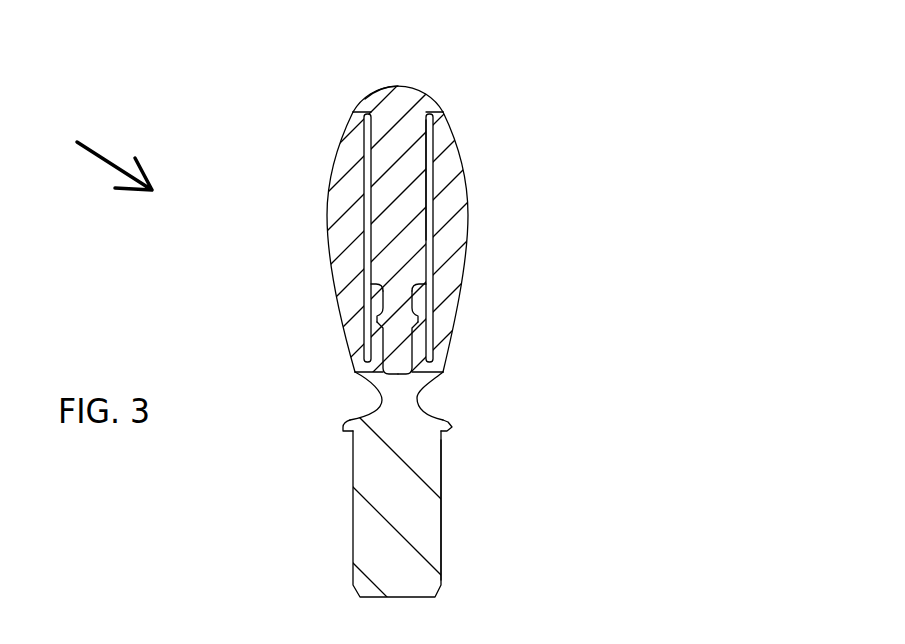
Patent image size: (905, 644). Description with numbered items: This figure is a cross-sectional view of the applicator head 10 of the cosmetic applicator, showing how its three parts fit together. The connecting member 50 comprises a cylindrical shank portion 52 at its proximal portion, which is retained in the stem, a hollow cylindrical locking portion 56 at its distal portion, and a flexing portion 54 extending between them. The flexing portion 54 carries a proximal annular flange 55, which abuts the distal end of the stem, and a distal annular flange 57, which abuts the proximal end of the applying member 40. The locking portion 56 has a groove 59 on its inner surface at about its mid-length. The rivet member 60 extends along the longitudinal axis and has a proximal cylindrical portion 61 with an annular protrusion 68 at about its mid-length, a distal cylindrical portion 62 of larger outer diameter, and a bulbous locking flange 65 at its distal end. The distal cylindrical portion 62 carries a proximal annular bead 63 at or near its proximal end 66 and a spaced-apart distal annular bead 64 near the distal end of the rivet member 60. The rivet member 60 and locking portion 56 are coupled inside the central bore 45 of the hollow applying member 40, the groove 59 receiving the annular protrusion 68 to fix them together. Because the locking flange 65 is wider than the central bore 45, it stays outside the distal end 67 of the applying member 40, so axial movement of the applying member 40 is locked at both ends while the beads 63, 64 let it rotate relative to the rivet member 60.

The applicator head 10 is at (94, 158).
The applying member 40 is at (453, 204).
The central bore 45 is at (430, 235).
The connecting member 50 is at (417, 527).
The shank portion 52 is at (441, 470).
The flexing portion 54 is at (413, 392).
The proximal annular flange 55 is at (343, 427).
The locking portion 56 is at (422, 342).
The distal annular flange 57 is at (355, 371).
The groove 59 is at (380, 319).
The rivet member 60 is at (403, 103).
The proximal cylindrical portion 61 is at (395, 341).
The distal cylindrical portion 62 is at (383, 218).
The proximal annular bead 63 is at (428, 282).
The distal annular bead 64 is at (422, 161).
The locking flange 65 is at (378, 102).
The proximal end of the distal cylindrical portion 66 is at (372, 282).
The distal end of the applying member 67 is at (360, 113).
The annular protrusion 68 is at (420, 318).